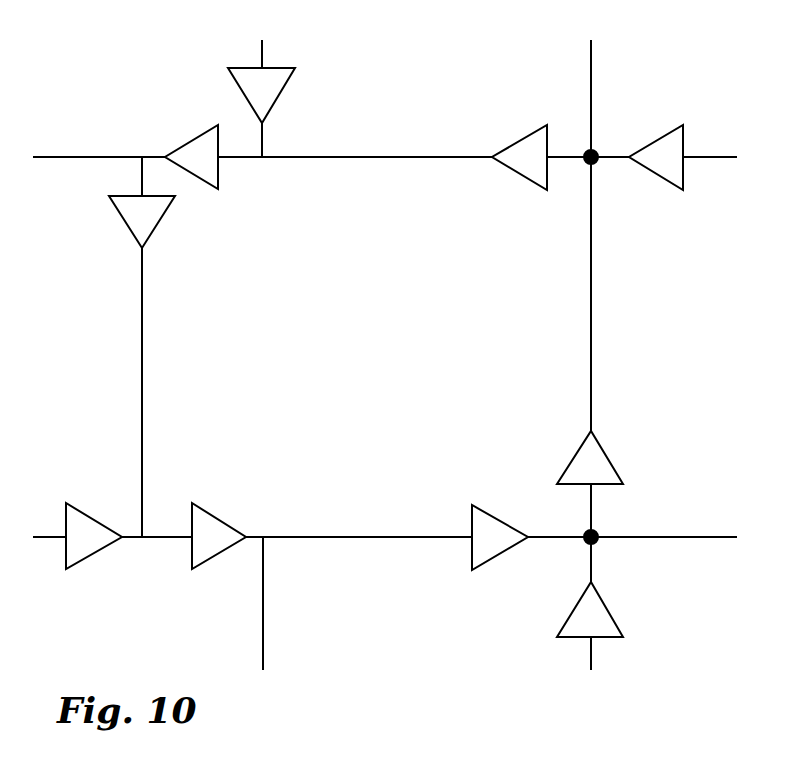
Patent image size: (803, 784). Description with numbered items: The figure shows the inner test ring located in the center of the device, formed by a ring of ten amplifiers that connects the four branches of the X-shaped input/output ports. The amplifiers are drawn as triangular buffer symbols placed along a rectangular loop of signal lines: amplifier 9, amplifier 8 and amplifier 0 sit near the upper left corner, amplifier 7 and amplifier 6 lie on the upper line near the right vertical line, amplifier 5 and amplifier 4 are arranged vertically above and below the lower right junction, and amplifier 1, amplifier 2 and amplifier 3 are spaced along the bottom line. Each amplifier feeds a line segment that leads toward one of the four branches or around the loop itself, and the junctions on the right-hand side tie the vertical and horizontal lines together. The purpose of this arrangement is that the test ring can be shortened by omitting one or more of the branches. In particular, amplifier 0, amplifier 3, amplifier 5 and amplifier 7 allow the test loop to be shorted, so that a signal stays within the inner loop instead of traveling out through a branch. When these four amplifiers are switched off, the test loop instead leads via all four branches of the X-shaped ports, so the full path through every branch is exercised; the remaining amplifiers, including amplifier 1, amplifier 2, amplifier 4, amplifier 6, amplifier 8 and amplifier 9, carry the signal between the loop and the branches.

The amplifier 0 is at (142, 222).
The amplifier 1 is at (94, 536).
The amplifier 2 is at (219, 536).
The amplifier 3 is at (500, 537).
The amplifier 4 is at (590, 609).
The amplifier 5 is at (590, 457).
The amplifier 6 is at (656, 157).
The amplifier 7 is at (519, 157).
The amplifier 8 is at (261, 95).
The amplifier 9 is at (191, 157).